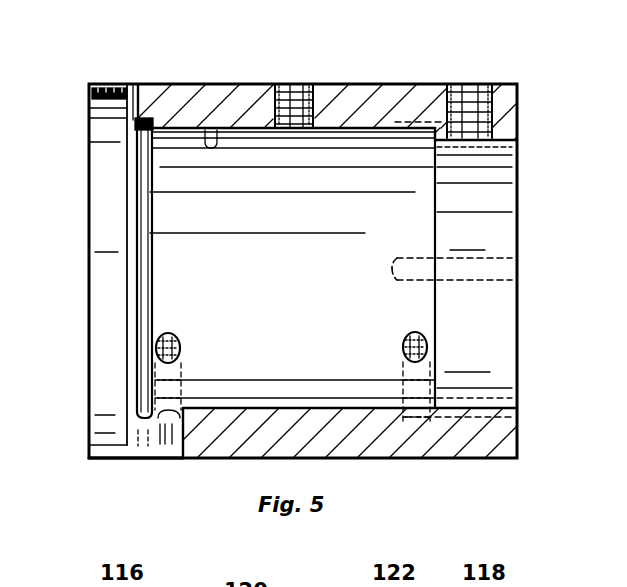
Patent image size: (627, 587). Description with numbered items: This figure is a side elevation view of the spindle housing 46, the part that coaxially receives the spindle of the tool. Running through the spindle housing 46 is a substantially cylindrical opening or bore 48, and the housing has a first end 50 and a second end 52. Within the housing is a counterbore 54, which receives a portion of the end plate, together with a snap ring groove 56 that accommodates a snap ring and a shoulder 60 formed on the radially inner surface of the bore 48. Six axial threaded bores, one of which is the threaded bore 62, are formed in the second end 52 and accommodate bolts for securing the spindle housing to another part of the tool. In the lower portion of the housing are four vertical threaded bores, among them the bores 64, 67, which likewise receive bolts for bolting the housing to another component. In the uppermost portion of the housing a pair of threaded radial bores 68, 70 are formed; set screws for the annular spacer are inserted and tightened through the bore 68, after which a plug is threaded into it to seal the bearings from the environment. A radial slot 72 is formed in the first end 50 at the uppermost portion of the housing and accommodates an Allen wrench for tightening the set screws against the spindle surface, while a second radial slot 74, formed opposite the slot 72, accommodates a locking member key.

The spindle housing 46 is at (524, 84).
The bore 48 is at (226, 126).
The first end 50 is at (89, 152).
The second end 52 is at (517, 254).
The counterbore 54 is at (105, 250).
The snap ring groove 56 is at (150, 348).
The shoulder 60 is at (435, 214).
The threaded bore 62 is at (478, 284).
The vertical threaded bore 64 is at (181, 343).
The vertical threaded bore 67 is at (403, 344).
The threaded radial bore 68 is at (299, 96).
The threaded radial bore 70 is at (468, 86).
The radial slot 72 is at (104, 90).
The second radial slot 74 is at (140, 462).